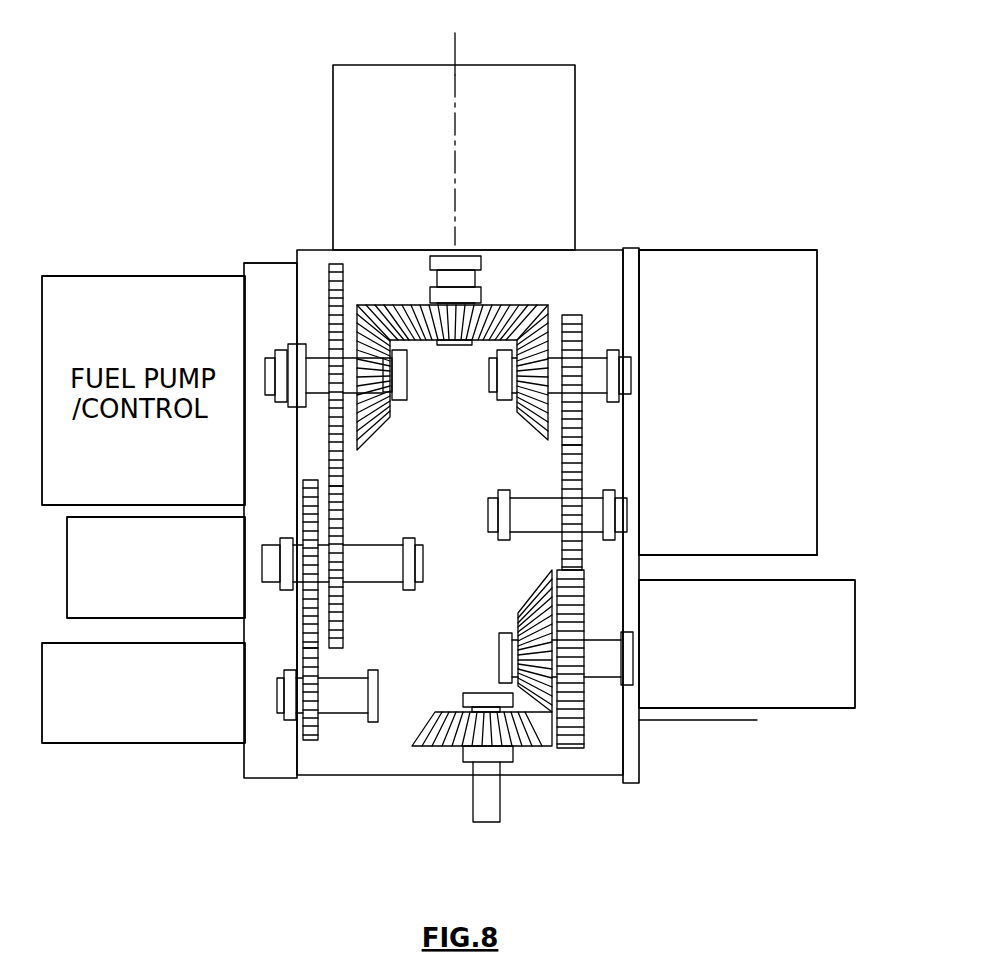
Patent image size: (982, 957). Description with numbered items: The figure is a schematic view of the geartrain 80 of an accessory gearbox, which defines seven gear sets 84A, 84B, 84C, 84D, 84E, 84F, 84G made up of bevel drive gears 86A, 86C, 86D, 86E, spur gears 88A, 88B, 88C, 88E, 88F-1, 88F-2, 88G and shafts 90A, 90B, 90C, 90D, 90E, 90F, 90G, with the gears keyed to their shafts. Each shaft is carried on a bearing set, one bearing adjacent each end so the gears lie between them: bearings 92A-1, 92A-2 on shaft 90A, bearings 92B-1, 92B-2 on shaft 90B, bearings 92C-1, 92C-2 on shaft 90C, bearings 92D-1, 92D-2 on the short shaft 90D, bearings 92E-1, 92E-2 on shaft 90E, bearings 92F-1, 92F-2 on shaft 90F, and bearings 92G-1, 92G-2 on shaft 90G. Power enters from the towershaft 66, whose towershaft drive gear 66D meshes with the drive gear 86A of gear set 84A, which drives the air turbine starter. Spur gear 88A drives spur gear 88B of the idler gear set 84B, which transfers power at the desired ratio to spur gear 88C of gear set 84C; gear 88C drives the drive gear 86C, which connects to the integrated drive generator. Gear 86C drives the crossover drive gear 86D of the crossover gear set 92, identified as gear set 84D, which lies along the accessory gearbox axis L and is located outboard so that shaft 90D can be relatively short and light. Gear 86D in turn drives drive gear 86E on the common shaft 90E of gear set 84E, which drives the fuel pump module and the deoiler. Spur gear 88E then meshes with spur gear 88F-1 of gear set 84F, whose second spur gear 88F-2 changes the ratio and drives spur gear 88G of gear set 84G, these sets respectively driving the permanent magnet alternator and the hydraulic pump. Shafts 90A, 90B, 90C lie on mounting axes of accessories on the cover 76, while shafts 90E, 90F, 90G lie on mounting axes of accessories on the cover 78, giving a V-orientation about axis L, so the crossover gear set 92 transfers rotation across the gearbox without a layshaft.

The geartrain 80 is at (642, 217).
The cover 78 is at (254, 766).
The cover 76 is at (633, 766).
The crossover gear set 92 is at (396, 198).
The accessory gearbox axis L is at (456, 47).
The gear set 84A is at (653, 733).
The gear set 84B is at (652, 486).
The gear set 84C is at (648, 308).
The gear set 84D is at (505, 275).
The gear set 84E is at (313, 272).
The gear set 84F is at (252, 559).
The gear set 84G is at (326, 740).
The drive gear 86A is at (538, 620).
The drive gear 86C is at (545, 345).
The drive gear 86D is at (505, 318).
The drive gear 86E is at (372, 422).
The spur gear 88A is at (575, 608).
The spur gear 88B is at (572, 465).
The spur gear 88C is at (572, 420).
The spur gear 88E is at (343, 457).
The spur gear 88F-1 is at (332, 507).
The spur gear 88F-2 is at (313, 626).
The spur gear 88G is at (306, 664).
The shaft 90A is at (600, 655).
The shaft 90B is at (590, 521).
The shaft 90C is at (590, 362).
The shaft 90D is at (437, 281).
The shaft 90E is at (396, 380).
The shaft 90F is at (384, 557).
The shaft 90G is at (344, 705).
The bearing 92A-1 is at (628, 664).
The bearing 92A-2 is at (502, 654).
The bearing 92B-1 is at (612, 505).
The bearing 92B-2 is at (492, 497).
The bearing 92C-1 is at (613, 372).
The bearing 92C-2 is at (503, 397).
The bearing 92D-1 is at (462, 262).
The bearing 92D-2 is at (472, 295).
The bearing 92E-1 is at (281, 350).
The bearing 92E-2 is at (399, 400).
The bearing 92F-1 is at (277, 564).
The bearing 92F-2 is at (413, 563).
The bearing 92G-1 is at (283, 707).
The bearing 92G-2 is at (376, 700).
The towershaft 66 is at (500, 797).
The towershaft drive gear 66D is at (450, 732).